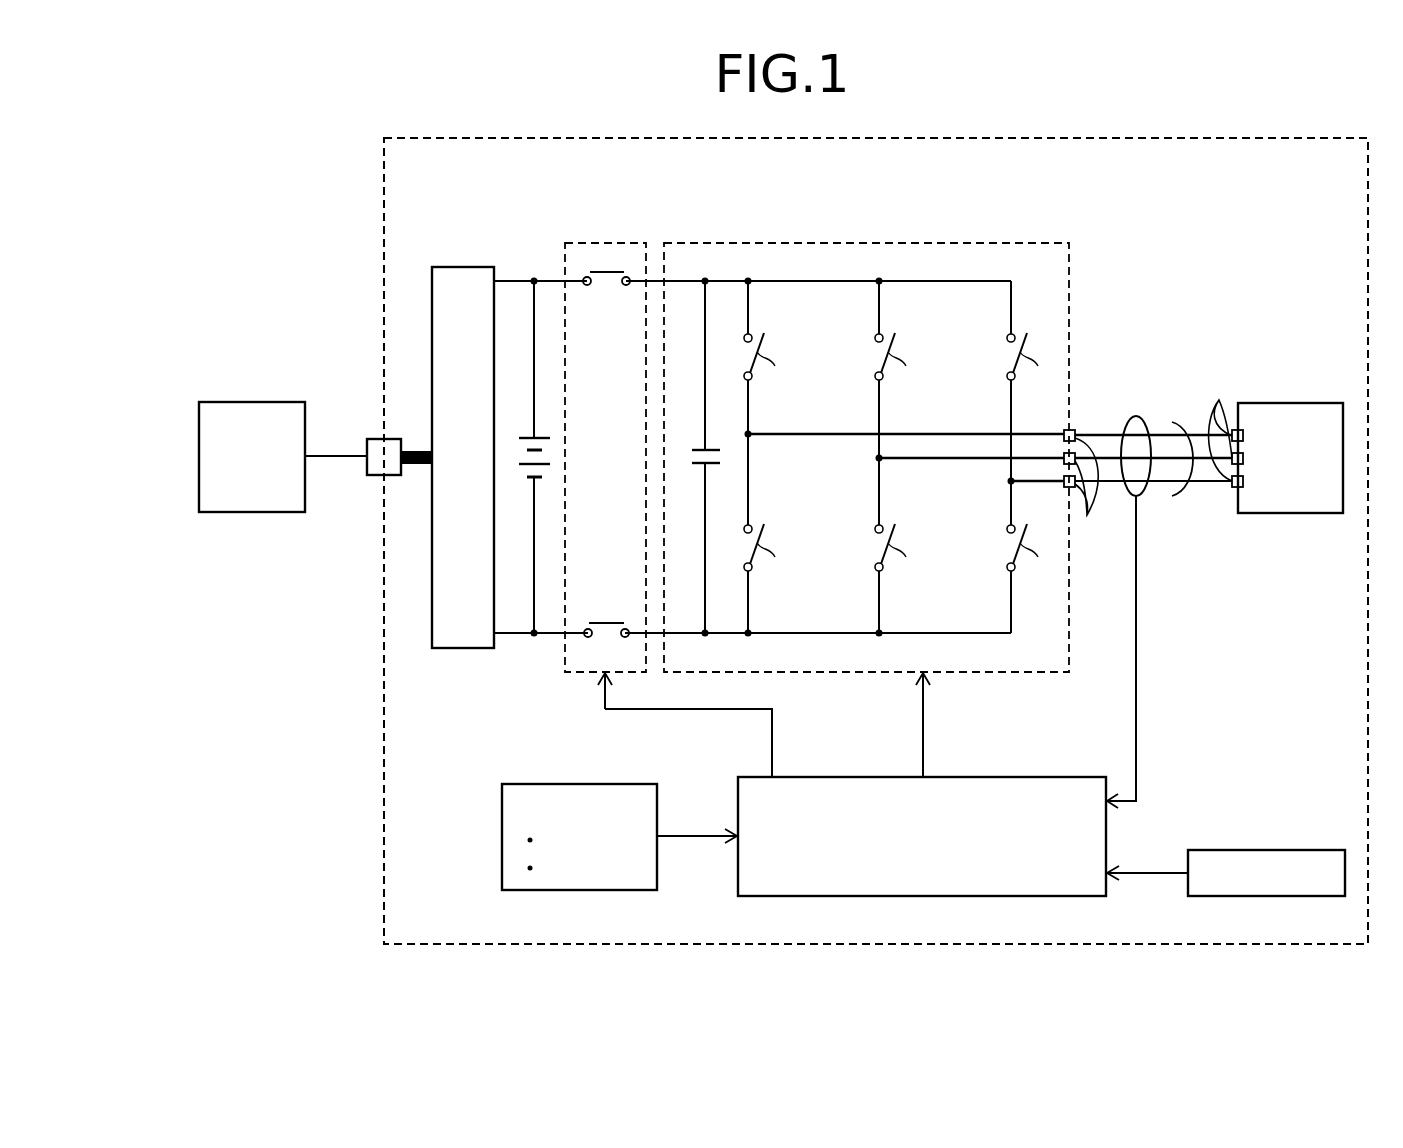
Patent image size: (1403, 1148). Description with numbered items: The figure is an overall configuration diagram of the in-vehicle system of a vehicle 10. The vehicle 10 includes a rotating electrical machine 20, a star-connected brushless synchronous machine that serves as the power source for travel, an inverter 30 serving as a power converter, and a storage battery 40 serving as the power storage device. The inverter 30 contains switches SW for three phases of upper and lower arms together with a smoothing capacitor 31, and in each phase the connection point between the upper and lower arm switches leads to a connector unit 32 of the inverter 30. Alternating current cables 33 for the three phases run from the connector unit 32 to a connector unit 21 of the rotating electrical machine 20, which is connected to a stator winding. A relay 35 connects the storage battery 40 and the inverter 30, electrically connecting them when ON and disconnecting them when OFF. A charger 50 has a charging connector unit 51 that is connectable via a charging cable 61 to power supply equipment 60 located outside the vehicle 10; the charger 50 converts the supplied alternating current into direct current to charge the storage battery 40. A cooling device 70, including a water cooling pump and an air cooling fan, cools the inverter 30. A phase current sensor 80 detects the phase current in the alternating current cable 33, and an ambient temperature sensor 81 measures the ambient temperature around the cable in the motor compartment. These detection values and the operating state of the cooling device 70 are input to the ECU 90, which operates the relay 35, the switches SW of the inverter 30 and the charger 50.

The vehicle 10 is at (1287, 138).
The rotating electrical machine 20 is at (1303, 403).
The connector unit of the rotating electrical machine 21 is at (1217, 425).
The inverter 30 is at (1017, 243).
The capacitor 31 is at (695, 449).
The connector unit of the inverter 32 is at (1094, 493).
The alternating current cable 33 is at (1179, 497).
The relay 35 is at (624, 243).
The storage battery 40 is at (528, 438).
The charger 50 is at (463, 267).
The charging connector unit 51 is at (367, 475).
The power supply equipment 60 is at (264, 402).
The charging cable 61 is at (324, 455).
The cooling device 70 is at (541, 784).
The phase current sensor 80 is at (1133, 416).
The ambient temperature sensor 81 is at (1304, 850).
The ECU 90 is at (1022, 777).